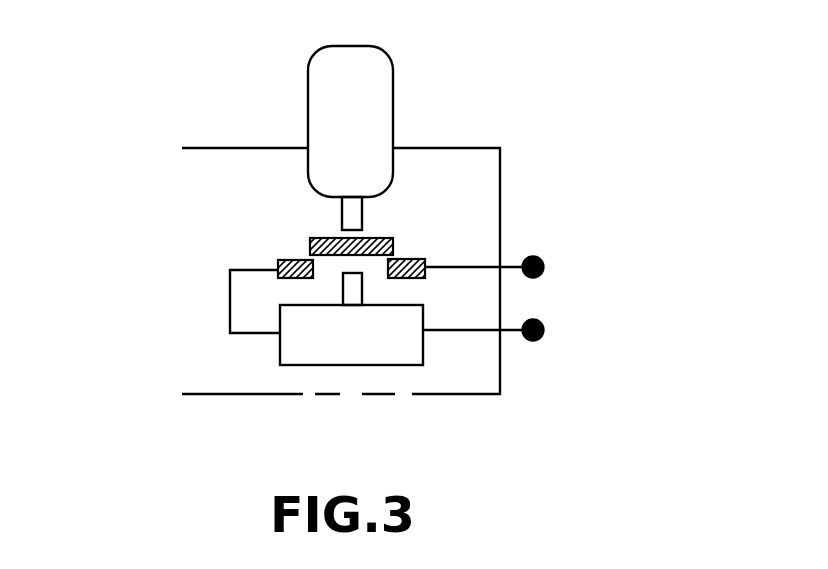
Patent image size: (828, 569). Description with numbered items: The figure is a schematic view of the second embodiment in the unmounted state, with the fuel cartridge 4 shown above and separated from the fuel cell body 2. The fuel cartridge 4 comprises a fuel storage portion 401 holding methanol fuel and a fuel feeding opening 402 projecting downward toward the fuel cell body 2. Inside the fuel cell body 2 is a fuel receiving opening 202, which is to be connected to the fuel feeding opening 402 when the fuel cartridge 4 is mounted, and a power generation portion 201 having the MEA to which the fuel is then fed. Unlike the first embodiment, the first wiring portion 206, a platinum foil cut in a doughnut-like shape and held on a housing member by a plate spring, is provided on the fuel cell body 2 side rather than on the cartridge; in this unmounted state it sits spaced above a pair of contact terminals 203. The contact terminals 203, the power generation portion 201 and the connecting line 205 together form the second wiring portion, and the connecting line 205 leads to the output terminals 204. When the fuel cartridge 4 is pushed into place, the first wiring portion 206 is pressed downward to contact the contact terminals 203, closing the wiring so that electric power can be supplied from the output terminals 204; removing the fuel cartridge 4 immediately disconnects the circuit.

The fuel cell body 2 is at (500, 160).
The fuel cartridge 4 is at (429, 115).
The fuel storage portion 401 is at (360, 67).
The fuel feeding opening 402 is at (362, 213).
The first wiring portion 206 is at (382, 237).
The contact terminals 203 is at (278, 264).
The fuel receiving opening 202 is at (343, 287).
The power generation portion 201 is at (343, 365).
The connecting line 205 is at (230, 310).
The output terminals 204 is at (545, 268).